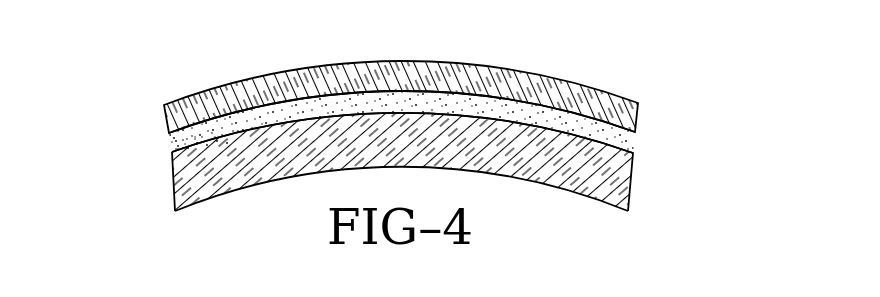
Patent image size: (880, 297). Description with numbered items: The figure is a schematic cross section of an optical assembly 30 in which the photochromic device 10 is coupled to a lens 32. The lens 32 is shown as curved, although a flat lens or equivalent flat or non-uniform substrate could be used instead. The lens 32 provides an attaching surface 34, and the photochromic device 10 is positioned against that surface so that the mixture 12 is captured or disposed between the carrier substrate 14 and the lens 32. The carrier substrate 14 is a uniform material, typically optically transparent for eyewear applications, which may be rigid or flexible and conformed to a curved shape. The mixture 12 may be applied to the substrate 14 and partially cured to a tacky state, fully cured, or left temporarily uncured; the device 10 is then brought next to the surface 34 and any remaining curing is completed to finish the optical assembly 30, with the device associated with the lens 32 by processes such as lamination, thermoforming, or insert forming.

The optical assembly 30 is at (409, 120).
The photochromic device 10 is at (434, 89).
The mixture 12 is at (409, 171).
The carrier substrate 14 is at (507, 65).
The lens 32 is at (632, 193).
The attaching surface 34 is at (248, 134).